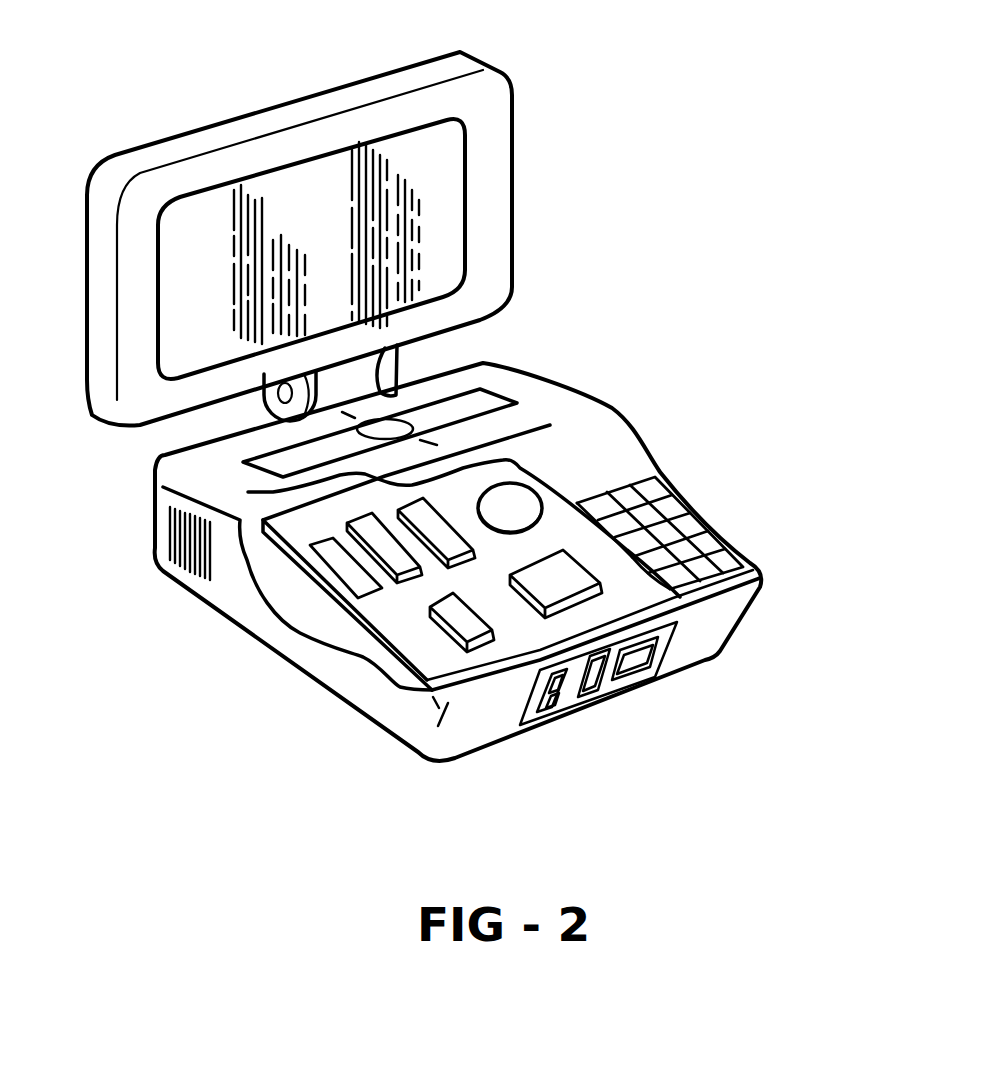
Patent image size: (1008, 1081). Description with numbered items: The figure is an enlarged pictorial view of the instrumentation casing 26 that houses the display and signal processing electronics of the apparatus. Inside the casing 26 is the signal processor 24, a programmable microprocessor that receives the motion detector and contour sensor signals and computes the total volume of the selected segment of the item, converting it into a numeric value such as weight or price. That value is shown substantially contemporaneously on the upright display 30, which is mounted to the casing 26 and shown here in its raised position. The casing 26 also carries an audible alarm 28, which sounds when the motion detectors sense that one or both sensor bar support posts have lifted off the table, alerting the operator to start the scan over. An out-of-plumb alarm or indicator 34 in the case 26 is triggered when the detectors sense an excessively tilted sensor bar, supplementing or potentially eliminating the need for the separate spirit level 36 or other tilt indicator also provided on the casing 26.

The signal processor 24 is at (374, 592).
The casing 26 is at (758, 618).
The audible alarm 28 is at (182, 540).
The upright display 30 is at (473, 53).
The out-of-plumb alarm or indicator 34 is at (518, 500).
The spirit level 36 is at (283, 461).